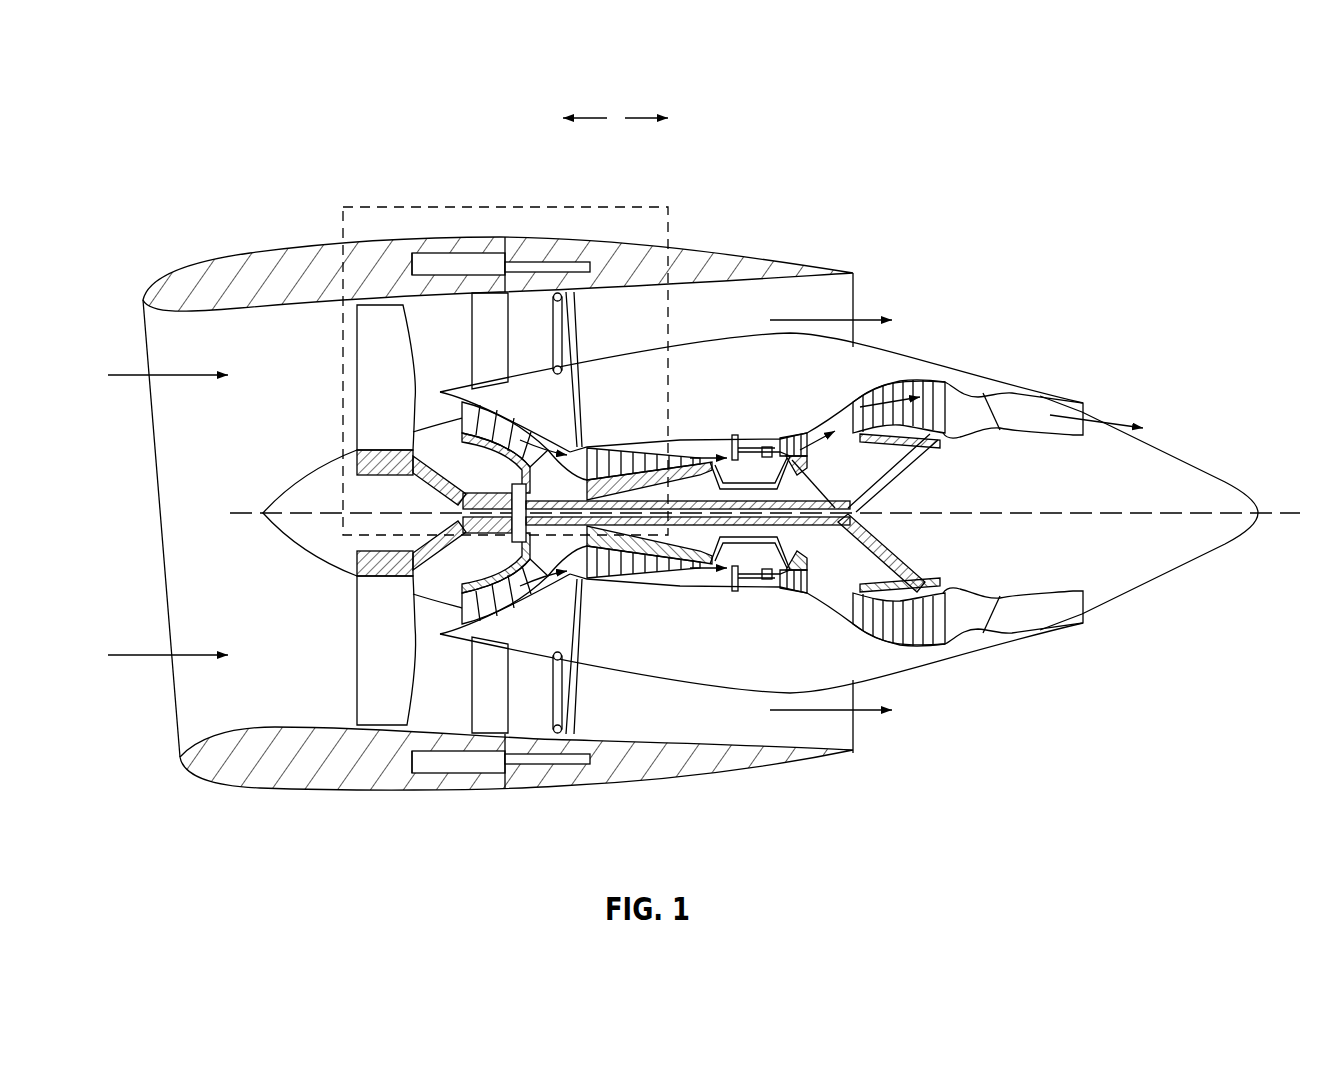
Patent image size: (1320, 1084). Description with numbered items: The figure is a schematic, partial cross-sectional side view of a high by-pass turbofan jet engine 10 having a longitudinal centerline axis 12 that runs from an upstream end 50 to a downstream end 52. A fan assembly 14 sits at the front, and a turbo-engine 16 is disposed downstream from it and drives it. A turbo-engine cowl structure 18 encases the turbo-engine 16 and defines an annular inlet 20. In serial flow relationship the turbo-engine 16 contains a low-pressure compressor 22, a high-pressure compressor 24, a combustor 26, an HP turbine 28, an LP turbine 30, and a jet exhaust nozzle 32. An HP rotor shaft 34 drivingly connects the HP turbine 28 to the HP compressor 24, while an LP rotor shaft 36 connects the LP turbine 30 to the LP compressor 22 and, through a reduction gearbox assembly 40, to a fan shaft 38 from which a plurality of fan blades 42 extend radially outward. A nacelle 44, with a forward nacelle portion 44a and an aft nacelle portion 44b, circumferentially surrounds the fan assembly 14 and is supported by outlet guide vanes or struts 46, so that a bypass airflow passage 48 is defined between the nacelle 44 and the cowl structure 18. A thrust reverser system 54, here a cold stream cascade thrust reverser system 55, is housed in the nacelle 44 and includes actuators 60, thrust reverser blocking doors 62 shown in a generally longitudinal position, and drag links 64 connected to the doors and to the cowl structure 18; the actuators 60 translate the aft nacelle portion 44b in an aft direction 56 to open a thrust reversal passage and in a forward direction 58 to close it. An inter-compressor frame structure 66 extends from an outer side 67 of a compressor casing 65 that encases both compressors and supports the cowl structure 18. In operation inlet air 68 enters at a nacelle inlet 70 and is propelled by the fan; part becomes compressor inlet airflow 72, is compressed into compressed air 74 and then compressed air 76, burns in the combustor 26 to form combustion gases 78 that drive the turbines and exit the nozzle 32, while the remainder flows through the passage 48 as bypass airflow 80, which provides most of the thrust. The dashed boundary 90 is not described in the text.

The engine 10 is at (985, 186).
The longitudinal centerline axis 12 is at (1042, 504).
The fan assembly 14 is at (268, 540).
The turbo-engine 16 is at (760, 328).
The turbo-engine cowl structure 18 is at (672, 675).
The annular inlet 20 is at (458, 606).
The low-pressure (LP) compressor 22 is at (500, 630).
The high-pressure (HP) compressor 24 is at (637, 575).
The combustor 26 is at (755, 577).
The HP turbine 28 is at (805, 588).
The LP turbine 30 is at (931, 655).
The jet exhaust nozzle 32 is at (1011, 618).
The HP rotor shaft 34 is at (862, 528).
The LP rotor shaft 36 is at (894, 468).
The fan shaft 38 is at (417, 480).
The reduction gearbox assembly 40 is at (512, 482).
The fan blades 42 is at (362, 357).
The nacelle 44 is at (358, 237).
The forward nacelle portion 44a is at (385, 232).
The aft nacelle portion 44b is at (693, 242).
The outlet guide vanes or struts 46 is at (472, 365).
The bypass airflow passage 48 is at (676, 726).
The upstream end 50 is at (141, 526).
The downstream end 52 is at (1295, 561).
The thrust reverser system 54 is at (493, 240).
The cold stream cascade thrust reverser system 55 is at (543, 463).
The aft direction 56 is at (648, 115).
The forward direction 58 is at (587, 115).
The actuators 60 is at (452, 260).
The thrust reverser blocking doors 62 is at (566, 295).
The drag links 64 is at (565, 330).
The compressor casing 65 is at (647, 436).
The inter-compressor frame structure 66 is at (572, 408).
The outer side 67 is at (513, 412).
The inlet air 68 is at (183, 372).
The nacelle inlet 70 is at (203, 717).
The compressor inlet airflow 72 is at (448, 410).
The compressed air 74 is at (553, 437).
The compressed air 76 is at (697, 458).
The combustion gases 78 is at (895, 383).
The bypass airflow 80 is at (862, 315).
The fan module boundary 90 is at (597, 207).